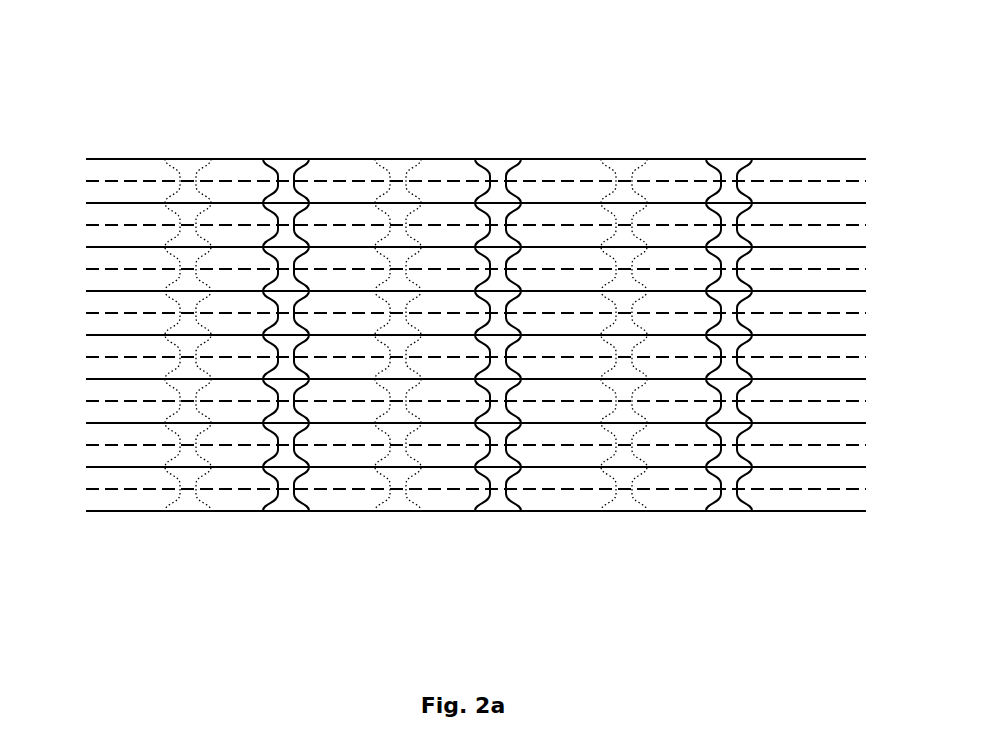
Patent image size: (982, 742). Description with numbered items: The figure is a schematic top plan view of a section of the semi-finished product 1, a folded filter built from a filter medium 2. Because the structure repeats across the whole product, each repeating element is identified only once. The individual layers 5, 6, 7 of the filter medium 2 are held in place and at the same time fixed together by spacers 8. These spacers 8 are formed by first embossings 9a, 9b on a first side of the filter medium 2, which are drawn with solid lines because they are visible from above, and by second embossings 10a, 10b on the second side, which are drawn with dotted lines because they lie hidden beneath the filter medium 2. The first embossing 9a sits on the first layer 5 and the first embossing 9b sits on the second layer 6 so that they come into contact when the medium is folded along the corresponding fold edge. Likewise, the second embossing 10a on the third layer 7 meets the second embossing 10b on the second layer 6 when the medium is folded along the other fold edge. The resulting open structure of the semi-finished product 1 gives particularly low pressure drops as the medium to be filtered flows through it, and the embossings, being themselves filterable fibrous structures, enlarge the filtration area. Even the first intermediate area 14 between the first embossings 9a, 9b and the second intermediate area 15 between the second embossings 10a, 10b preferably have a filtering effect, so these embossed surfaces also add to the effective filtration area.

The semi-finished product 1 is at (704, 67).
The filter medium 2 is at (113, 506).
The first layer 5 is at (230, 287).
The second layer 6 is at (252, 257).
The third layer 7 is at (250, 230).
The spacers 8 is at (520, 369).
The first embossing 9a is at (293, 283).
The first embossing 9b is at (287, 270).
The second embossing 10a is at (403, 253).
The second embossing 10b is at (392, 235).
The first intermediate area 14 is at (287, 270).
The second intermediate area 15 is at (392, 235).